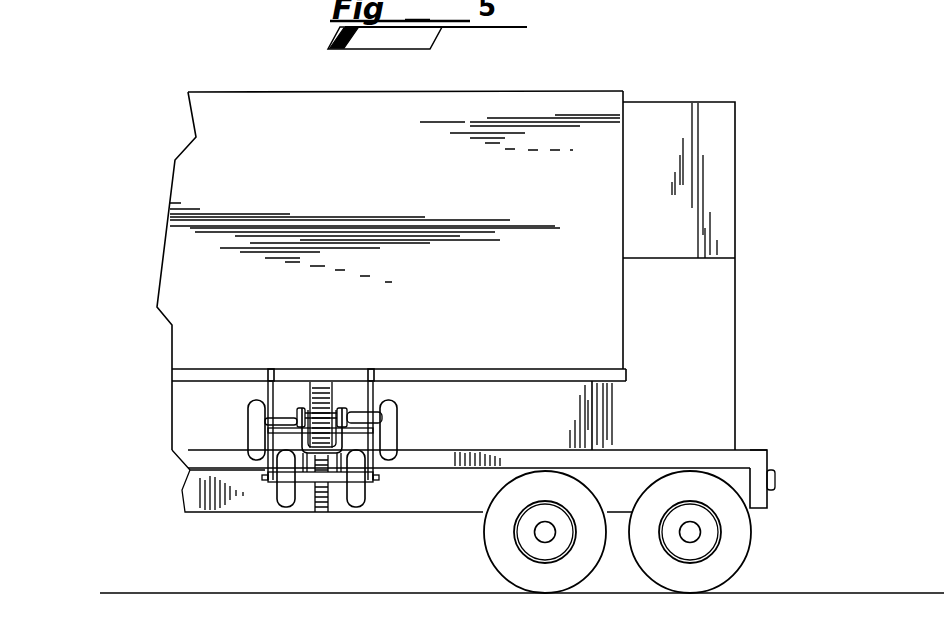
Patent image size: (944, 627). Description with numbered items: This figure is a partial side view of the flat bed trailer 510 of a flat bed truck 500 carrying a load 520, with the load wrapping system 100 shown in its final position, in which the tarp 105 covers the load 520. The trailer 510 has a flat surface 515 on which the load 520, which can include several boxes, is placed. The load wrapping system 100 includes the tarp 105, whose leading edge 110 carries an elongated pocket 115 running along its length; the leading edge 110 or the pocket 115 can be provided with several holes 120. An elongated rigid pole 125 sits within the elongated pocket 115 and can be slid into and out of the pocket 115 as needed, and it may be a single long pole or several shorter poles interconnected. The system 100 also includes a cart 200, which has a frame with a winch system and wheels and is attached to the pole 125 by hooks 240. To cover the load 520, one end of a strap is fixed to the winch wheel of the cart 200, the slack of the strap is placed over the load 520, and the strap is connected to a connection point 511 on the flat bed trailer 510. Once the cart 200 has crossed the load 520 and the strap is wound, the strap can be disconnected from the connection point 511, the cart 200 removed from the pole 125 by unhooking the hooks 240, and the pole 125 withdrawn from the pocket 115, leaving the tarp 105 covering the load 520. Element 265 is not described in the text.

The flat bed truck 500 is at (157, 118).
The load wrapping system 100 is at (143, 219).
The tarp 105 is at (545, 105).
The top rail 265 is at (636, 6).
The load 520 is at (718, 150).
The hooks 240 is at (269, 368).
The holes 120 is at (278, 369).
The elongated rigid pole 125 is at (625, 372).
The leading edge 110 is at (623, 387).
The elongated pocket 115 is at (627, 372).
The flat surface 515 is at (740, 457).
The flat bed trailer 510 is at (775, 455).
The cart 200 is at (235, 414).
The connection point 511 is at (322, 508).